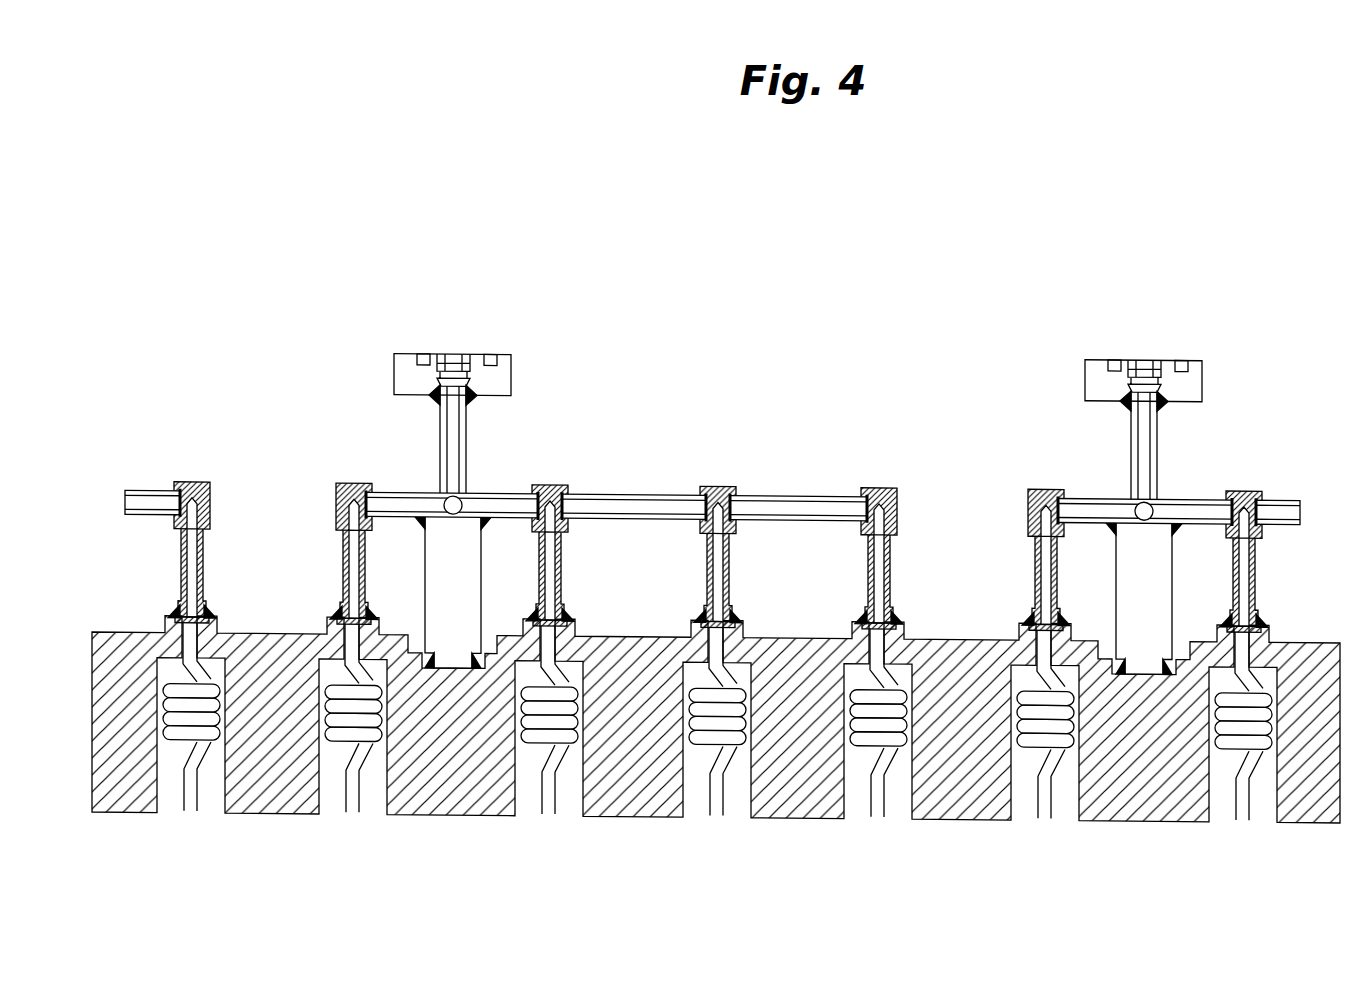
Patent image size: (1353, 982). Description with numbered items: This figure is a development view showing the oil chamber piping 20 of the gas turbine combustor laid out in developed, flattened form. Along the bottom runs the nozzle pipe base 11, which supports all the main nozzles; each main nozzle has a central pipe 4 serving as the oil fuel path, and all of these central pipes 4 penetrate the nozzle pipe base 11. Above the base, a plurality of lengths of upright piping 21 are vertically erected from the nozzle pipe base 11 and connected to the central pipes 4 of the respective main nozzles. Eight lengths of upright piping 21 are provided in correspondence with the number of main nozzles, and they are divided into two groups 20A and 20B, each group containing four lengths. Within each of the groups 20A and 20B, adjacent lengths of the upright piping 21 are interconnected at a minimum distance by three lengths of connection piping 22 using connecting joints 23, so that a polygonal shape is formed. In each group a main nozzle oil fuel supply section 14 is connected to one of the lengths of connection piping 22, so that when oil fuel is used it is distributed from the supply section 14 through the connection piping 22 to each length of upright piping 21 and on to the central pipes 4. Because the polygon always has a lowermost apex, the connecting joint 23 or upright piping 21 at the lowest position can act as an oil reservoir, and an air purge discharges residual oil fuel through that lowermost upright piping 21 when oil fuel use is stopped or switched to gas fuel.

The central pipe 4 is at (198, 793).
The nozzle pipe base 11 is at (452, 800).
The main nozzle oil fuel supply section 14 is at (394, 372).
The oil chamber piping 20 is at (905, 195).
The first group of oil chamber piping 20A is at (853, 350).
The second group of oil chamber piping 20B is at (1092, 323).
The upright piping 21 is at (204, 545).
The connection piping 22 is at (144, 490).
The connecting joint 23 is at (193, 481).